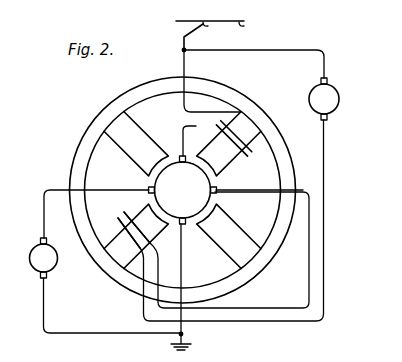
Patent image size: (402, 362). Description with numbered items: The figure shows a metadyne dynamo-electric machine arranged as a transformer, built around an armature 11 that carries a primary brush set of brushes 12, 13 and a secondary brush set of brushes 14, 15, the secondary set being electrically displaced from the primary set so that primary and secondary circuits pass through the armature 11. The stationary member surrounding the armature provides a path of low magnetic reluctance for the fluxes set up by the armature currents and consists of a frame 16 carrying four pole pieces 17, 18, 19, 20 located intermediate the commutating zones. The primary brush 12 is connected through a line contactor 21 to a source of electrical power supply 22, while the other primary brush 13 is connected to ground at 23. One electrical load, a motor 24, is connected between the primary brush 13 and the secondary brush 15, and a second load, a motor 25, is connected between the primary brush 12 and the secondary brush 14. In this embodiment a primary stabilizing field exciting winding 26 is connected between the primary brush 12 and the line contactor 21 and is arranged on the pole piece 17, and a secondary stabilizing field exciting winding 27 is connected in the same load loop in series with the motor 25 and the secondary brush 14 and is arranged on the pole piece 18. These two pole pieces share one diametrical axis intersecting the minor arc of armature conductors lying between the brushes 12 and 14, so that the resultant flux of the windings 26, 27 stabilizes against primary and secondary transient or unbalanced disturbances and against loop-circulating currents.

The armature 11 is at (155, 196).
The primary brush 12 is at (179, 155).
The primary brush 13 is at (186, 224).
The secondary brush 14 is at (216, 188).
The secondary brush 15 is at (149, 185).
The frame 16 is at (262, 267).
The pole piece 17 is at (216, 145).
The pole piece 18 is at (151, 236).
The pole piece 19 is at (237, 232).
The pole piece 20 is at (141, 128).
The line contactor 21 is at (208, 27).
The source of electrical power supply 22 is at (242, 27).
The ground 23 is at (184, 335).
The motor 24 is at (30, 258).
The motor 25 is at (339, 93).
The primary stabilizing field exciting winding 26 is at (243, 148).
The secondary stabilizing field exciting winding 27 is at (119, 224).